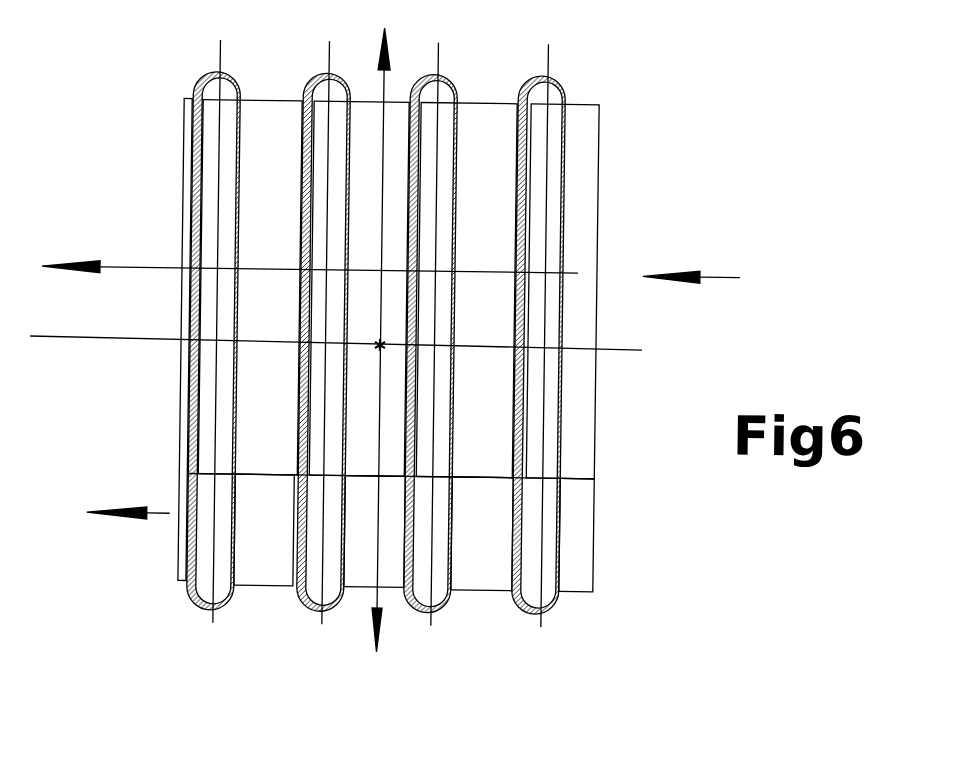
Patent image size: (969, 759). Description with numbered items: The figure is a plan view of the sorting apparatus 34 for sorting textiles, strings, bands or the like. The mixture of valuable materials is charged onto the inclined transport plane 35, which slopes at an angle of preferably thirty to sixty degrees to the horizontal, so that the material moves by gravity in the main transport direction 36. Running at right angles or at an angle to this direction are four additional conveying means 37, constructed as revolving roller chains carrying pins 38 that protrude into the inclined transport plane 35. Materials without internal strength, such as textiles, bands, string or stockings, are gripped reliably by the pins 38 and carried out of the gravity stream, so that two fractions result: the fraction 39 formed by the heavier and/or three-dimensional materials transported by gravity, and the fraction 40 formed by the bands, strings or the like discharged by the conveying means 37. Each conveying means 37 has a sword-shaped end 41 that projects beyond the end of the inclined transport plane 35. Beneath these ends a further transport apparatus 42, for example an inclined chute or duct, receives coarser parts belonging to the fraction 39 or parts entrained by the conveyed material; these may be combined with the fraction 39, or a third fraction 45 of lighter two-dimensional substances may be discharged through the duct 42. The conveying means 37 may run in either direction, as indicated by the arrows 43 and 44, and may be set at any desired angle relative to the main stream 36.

The sorting apparatus 34 is at (644, 106).
The inclined transport plane 35 is at (581, 247).
The main transport direction 36 is at (713, 274).
The conveying means 37 is at (207, 191).
The pins 38 is at (418, 178).
The fraction 39 is at (105, 272).
The fraction 40 is at (220, 635).
The end of the conveying means 41 is at (438, 557).
The further transport apparatus 42 is at (280, 548).
The arrow 43 is at (437, 637).
The arrow 44 is at (382, 62).
The third fraction 45 is at (269, 488).